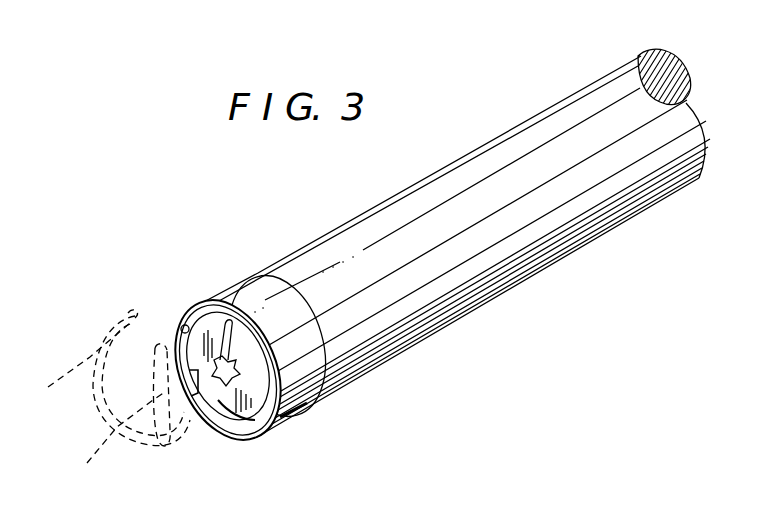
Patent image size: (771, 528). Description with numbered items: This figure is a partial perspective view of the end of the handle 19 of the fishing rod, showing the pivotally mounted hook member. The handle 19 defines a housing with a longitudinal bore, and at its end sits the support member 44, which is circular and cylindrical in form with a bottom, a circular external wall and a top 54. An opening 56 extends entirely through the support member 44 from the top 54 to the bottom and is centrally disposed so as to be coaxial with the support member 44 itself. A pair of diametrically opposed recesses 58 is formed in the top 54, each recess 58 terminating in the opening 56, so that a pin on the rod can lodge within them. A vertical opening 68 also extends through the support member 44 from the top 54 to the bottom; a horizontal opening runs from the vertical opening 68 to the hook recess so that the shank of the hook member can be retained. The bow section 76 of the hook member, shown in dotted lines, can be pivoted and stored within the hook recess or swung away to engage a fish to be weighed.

The handle 19 is at (515, 284).
The support member 44 is at (298, 419).
The top 54 is at (208, 328).
The opening 56 is at (234, 320).
The recess 58 is at (278, 267).
The vertical opening 68 is at (186, 324).
The bow section 76 is at (238, 474).